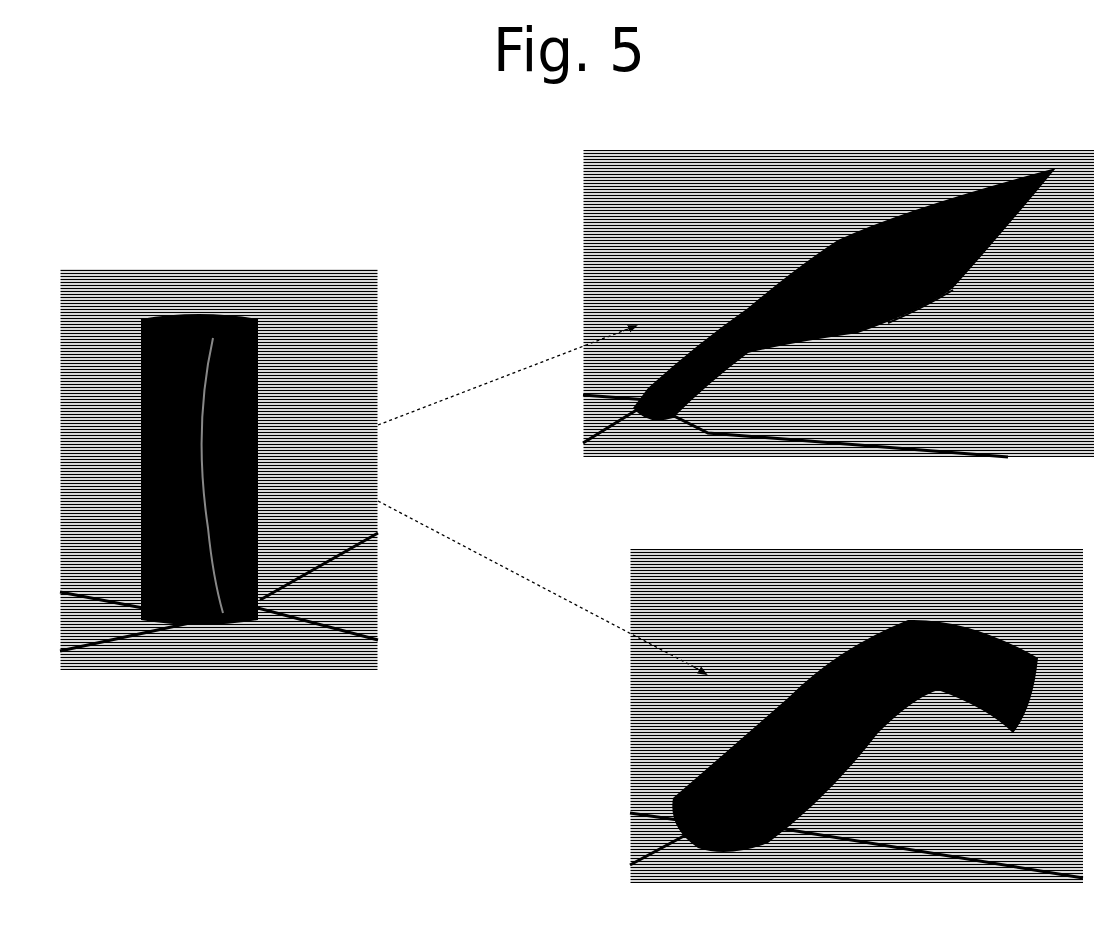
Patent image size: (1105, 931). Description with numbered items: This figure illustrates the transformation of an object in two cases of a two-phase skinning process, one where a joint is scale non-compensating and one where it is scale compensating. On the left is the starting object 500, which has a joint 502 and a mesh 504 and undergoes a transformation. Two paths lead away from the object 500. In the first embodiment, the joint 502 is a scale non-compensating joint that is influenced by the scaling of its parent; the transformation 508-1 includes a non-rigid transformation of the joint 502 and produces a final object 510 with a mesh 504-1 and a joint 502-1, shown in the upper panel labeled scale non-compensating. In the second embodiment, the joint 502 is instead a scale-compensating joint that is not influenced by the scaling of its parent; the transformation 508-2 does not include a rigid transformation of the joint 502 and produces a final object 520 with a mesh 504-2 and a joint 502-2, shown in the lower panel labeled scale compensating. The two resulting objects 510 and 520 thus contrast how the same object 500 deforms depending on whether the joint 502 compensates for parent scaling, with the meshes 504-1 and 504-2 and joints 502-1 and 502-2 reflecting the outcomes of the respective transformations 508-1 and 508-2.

The object 500 is at (118, 283).
The joint 502 is at (205, 415).
The mesh 504 is at (222, 325).
The transformation 508-1 is at (507, 375).
The transformation 508-2 is at (542, 587).
The final object 510 is at (938, 152).
The joint 502-1 is at (830, 250).
The mesh 504-1 is at (910, 290).
The final object 520 is at (955, 572).
The joint 502-2 is at (910, 645).
The mesh 504-2 is at (980, 700).